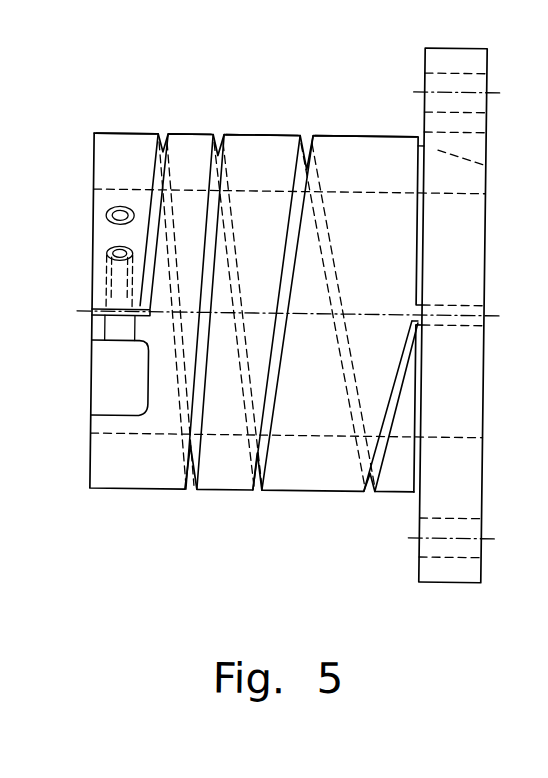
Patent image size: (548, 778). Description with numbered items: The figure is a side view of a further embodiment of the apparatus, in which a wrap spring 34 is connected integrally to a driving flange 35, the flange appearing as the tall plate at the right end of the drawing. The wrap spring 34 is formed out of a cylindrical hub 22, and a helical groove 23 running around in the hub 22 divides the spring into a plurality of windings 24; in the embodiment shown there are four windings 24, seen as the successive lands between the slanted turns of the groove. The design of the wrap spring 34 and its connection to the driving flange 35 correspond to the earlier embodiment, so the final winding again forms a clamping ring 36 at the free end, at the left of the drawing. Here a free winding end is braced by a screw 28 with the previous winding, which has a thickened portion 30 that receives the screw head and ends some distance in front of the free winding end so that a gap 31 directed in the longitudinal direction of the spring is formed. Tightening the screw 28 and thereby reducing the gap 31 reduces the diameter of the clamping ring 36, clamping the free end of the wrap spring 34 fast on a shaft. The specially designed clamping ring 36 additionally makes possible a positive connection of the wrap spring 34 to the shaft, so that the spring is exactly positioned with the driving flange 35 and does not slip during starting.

The cylindrical hub 22 is at (274, 114).
The helical groove 23 is at (371, 492).
The windings 24 is at (118, 152).
The screw 28 is at (115, 329).
The thickened portion 30 is at (107, 464).
The gap 31 is at (92, 312).
The wrap spring 34 is at (233, 497).
The driving flange 35 is at (474, 59).
The clamping ring 36 is at (81, 408).